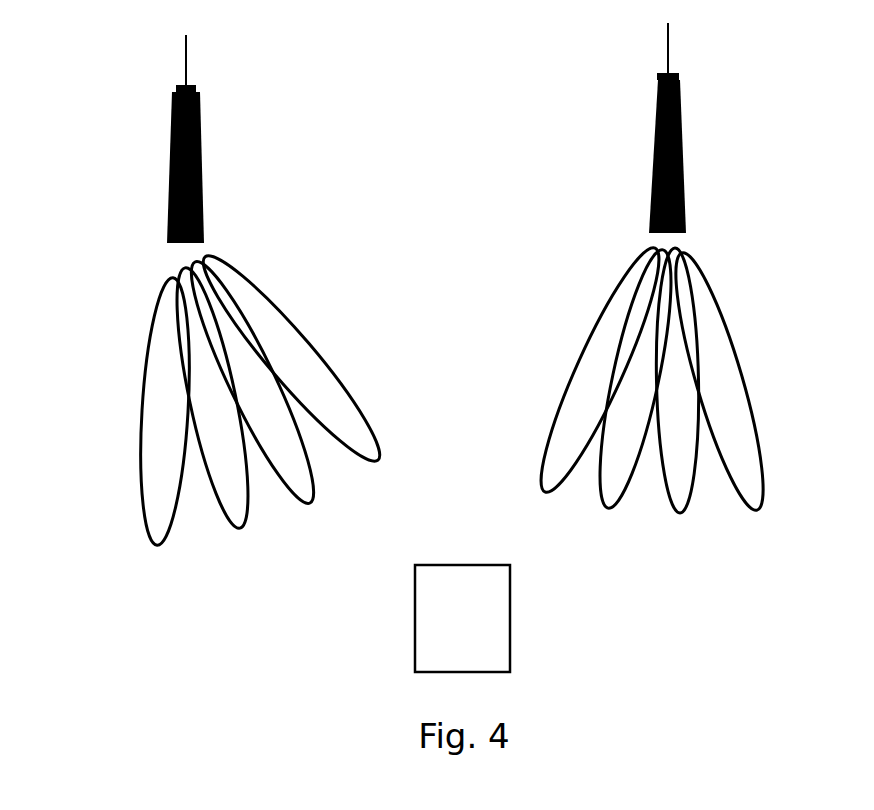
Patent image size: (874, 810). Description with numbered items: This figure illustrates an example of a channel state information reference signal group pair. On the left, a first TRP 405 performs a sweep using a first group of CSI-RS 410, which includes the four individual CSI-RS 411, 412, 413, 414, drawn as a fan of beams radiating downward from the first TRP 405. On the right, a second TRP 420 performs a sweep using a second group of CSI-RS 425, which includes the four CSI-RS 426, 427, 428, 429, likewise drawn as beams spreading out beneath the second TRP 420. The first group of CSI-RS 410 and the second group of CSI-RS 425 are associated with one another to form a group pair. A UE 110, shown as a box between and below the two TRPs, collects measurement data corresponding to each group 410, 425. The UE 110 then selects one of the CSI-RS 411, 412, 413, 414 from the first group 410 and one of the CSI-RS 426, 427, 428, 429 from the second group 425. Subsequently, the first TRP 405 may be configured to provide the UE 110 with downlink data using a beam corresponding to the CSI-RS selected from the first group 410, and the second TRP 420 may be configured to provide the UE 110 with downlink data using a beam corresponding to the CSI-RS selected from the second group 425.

The first TRP 405 is at (160, 139).
The first group of CSI-RS 410 is at (226, 394).
The CSI-RS 411 is at (165, 411).
The CSI-RS 412 is at (213, 398).
The CSI-RS 413 is at (252, 382).
The CSI-RS 414 is at (292, 358).
The second TRP 420 is at (640, 128).
The second group of CSI-RS 425 is at (670, 378).
The CSI-RS 426 is at (600, 370).
The CSI-RS 427 is at (636, 379).
The CSI-RS 428 is at (677, 381).
The CSI-RS 429 is at (719, 381).
The UE 110 is at (462, 618).